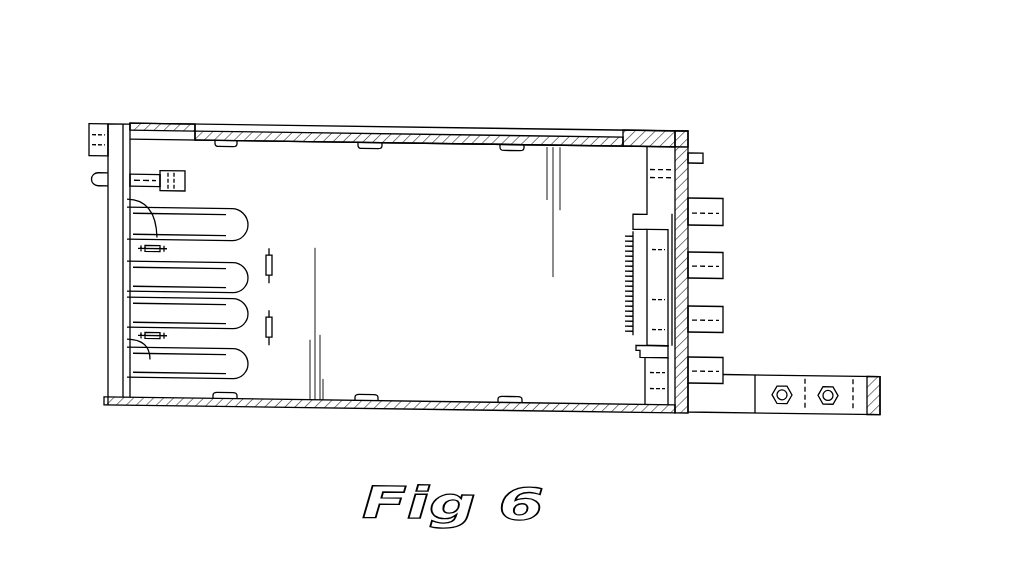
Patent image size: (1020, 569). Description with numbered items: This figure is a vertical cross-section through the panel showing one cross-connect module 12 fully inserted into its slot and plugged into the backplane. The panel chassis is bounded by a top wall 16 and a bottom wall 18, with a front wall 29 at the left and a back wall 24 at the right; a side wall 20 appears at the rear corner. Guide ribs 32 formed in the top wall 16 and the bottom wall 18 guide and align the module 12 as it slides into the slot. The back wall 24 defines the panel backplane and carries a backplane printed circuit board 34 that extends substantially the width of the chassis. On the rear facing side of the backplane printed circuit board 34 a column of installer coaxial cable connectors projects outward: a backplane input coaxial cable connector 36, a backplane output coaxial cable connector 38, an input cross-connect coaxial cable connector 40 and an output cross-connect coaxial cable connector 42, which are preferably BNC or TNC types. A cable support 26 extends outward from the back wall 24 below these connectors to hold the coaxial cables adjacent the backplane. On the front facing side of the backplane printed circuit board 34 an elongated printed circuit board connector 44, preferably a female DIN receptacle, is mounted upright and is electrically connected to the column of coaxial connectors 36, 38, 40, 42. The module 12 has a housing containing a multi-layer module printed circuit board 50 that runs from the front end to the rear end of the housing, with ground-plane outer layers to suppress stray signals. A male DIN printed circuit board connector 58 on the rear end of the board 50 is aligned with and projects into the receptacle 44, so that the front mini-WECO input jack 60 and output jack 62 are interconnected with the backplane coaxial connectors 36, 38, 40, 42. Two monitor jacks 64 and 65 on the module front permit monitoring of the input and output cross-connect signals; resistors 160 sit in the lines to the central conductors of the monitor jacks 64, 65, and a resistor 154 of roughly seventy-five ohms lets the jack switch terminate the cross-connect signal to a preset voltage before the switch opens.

The module 12 is at (100, 328).
The top wall 16 is at (384, 127).
The bottom wall 18 is at (348, 410).
The side wall 20 is at (660, 147).
The back wall 24 is at (692, 172).
The cable support 26 is at (768, 409).
The front wall 29 is at (118, 128).
The guide ribs 32 is at (226, 151).
The backplane printed circuit board 34 is at (670, 399).
The backplane input coaxial cable connector 36 is at (706, 204).
The backplane output coaxial cable connector 38 is at (706, 258).
The input cross-connect coaxial cable connector 40 is at (706, 312).
The output cross-connect coaxial cable connector 42 is at (706, 364).
The printed circuit board connector 44 is at (658, 229).
The module printed circuit board 50 is at (456, 268).
The printed circuit board connector 58 is at (630, 319).
The input jack 60 is at (208, 280).
The output jack 62 is at (232, 316).
The monitor jack 64 is at (212, 229).
The monitor jack 65 is at (196, 365).
The resistor 154 is at (152, 249).
The resistors 160 is at (276, 267).